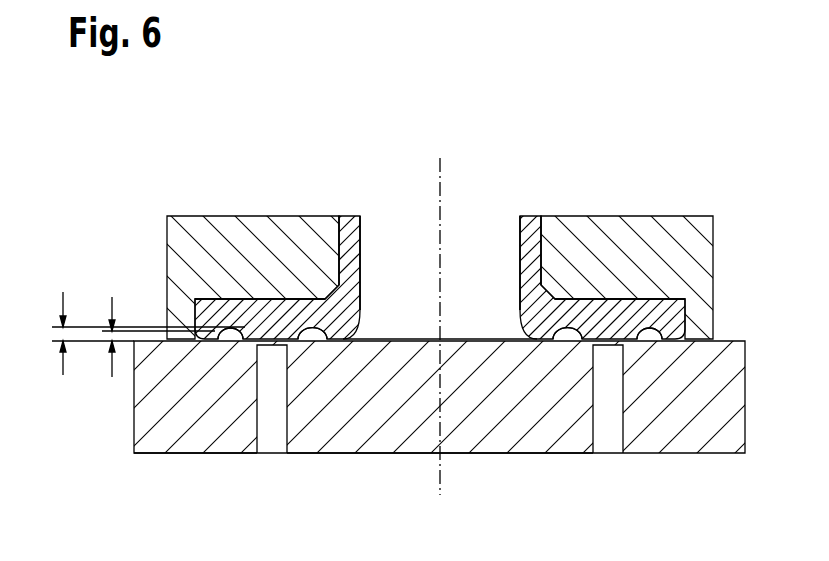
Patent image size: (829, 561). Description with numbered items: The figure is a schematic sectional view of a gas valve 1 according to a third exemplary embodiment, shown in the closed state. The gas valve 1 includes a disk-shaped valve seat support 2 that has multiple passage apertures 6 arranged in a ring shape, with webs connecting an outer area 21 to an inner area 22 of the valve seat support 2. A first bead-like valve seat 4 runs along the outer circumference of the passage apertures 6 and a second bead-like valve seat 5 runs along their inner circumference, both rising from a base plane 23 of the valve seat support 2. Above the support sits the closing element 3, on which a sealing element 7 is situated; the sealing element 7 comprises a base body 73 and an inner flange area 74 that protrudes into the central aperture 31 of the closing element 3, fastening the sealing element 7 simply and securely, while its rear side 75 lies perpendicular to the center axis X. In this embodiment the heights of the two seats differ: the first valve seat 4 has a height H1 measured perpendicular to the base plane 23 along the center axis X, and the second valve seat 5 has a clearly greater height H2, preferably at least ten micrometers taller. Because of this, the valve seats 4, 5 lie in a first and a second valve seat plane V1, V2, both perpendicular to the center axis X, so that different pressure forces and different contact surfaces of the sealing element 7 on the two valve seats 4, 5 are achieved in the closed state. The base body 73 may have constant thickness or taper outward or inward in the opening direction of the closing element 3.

The gas valve 1 is at (446, 344).
The valve seat support 2 is at (417, 436).
The closing element 3 is at (322, 239).
The first valve seat 4 is at (236, 341).
The second valve seat 5 is at (310, 341).
The passage apertures 6 is at (268, 442).
The sealing element 7 is at (478, 344).
The outer area 21 is at (189, 443).
The inner area 22 is at (391, 442).
The base plane 23 is at (384, 331).
The central aperture 31 is at (480, 232).
The base body 73 is at (223, 312).
The inner flange area 74 is at (353, 222).
The rear side 75 is at (282, 296).
The center axis X is at (441, 326).
The first valve seat plane V1 is at (139, 330).
The second valve seat plane V2 is at (80, 326).
The height of first valve seat H1 is at (97, 345).
The height of second valve seat H2 is at (80, 331).